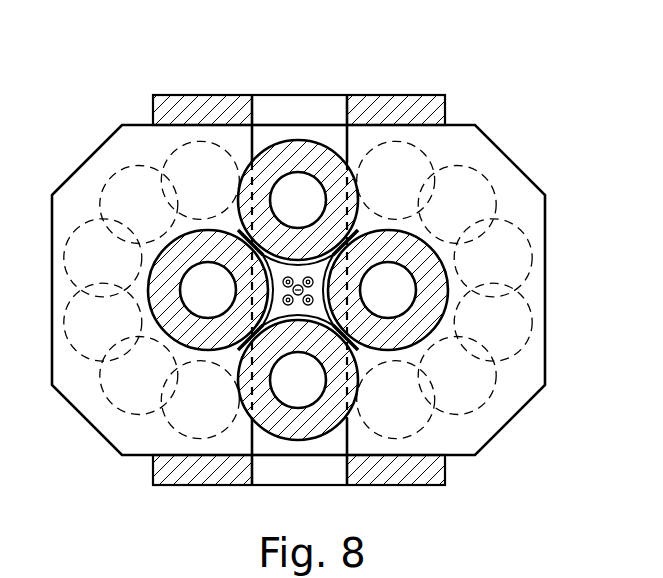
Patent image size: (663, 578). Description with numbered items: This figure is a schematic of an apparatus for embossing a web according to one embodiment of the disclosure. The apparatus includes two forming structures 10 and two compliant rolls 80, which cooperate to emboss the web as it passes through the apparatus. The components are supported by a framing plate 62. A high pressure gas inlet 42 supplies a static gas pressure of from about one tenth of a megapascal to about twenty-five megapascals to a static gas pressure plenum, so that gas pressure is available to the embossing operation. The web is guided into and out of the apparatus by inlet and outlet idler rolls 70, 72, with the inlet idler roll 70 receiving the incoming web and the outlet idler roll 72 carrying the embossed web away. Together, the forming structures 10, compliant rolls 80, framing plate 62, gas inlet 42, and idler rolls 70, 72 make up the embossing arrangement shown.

The forming structure 10 is at (198, 225).
The high pressure gas inlet 42 is at (240, 225).
The framing plate 62 is at (238, 348).
The inlet idler roll 70 is at (122, 197).
The outlet idler roll 72 is at (397, 164).
The compliant roll 80 is at (297, 140).